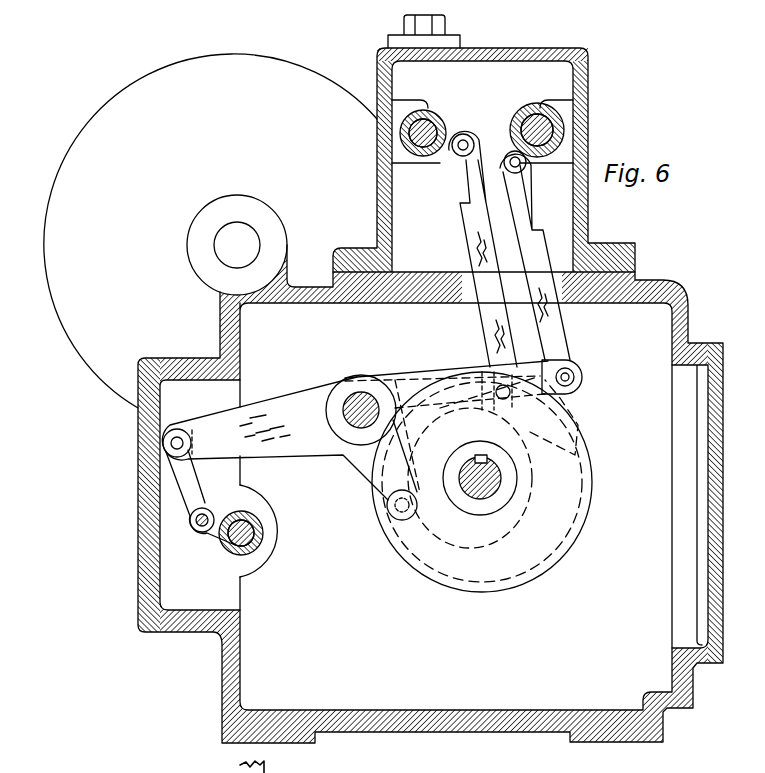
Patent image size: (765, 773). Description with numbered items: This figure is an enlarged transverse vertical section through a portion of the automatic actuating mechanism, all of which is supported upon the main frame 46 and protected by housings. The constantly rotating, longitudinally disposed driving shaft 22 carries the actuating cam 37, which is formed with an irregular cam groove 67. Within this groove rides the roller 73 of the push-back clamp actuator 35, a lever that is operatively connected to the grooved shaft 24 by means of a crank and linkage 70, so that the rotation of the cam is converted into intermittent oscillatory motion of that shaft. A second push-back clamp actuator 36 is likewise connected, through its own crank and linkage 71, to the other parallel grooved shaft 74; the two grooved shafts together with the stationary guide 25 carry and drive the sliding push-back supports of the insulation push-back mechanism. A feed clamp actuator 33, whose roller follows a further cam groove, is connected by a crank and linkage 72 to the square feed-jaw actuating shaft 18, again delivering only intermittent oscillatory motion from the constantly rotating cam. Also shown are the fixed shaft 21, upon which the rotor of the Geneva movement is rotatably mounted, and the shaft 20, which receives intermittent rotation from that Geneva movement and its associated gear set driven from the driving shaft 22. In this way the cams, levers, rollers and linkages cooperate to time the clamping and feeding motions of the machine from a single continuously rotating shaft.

The square feed-jaw actuating shaft 18 is at (238, 546).
The shaft 20 is at (228, 247).
The fixed shaft 21 is at (361, 396).
The driving shaft 22 is at (492, 500).
The grooved shaft 24 is at (428, 130).
The stationary guide 25 is at (455, 40).
The feed clamp actuator 33 is at (296, 386).
The push-back clamp actuator 35 is at (413, 378).
The push-back clamp actuator 36 is at (575, 388).
The cam 37 is at (500, 590).
The main frame 46 is at (432, 711).
The cam groove 67 is at (455, 576).
The crank and linkage 70 is at (481, 247).
The crank and linkage 71 is at (522, 219).
The crank and linkage 72 is at (186, 488).
The roller 73 is at (386, 521).
The grooved shaft 74 is at (535, 128).